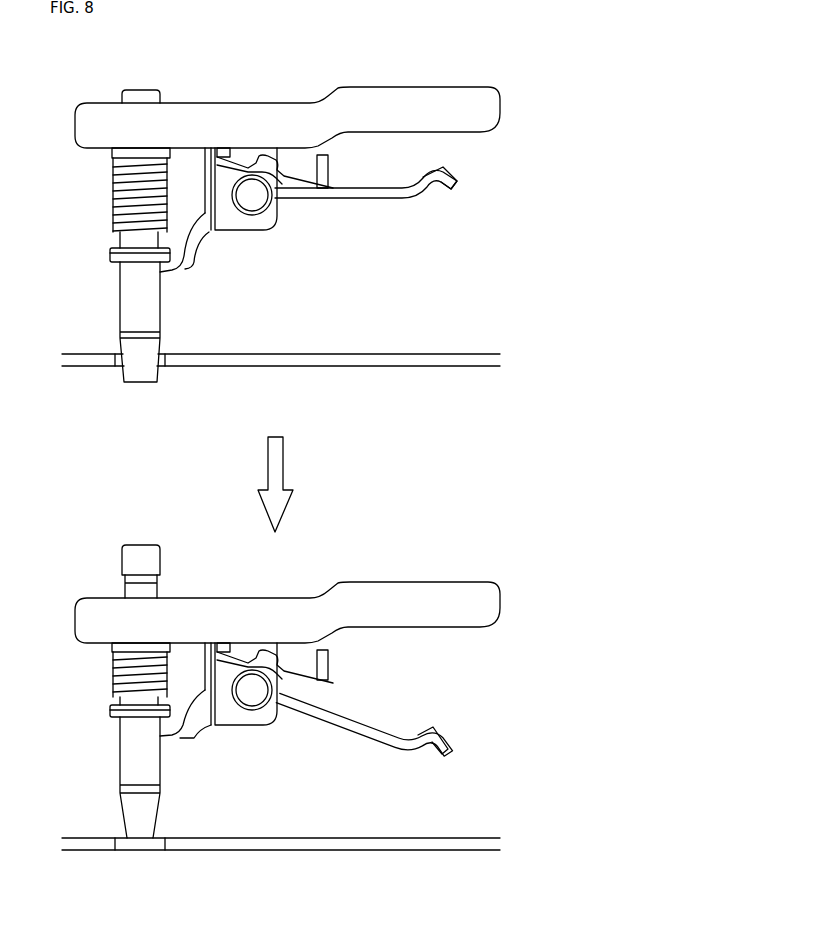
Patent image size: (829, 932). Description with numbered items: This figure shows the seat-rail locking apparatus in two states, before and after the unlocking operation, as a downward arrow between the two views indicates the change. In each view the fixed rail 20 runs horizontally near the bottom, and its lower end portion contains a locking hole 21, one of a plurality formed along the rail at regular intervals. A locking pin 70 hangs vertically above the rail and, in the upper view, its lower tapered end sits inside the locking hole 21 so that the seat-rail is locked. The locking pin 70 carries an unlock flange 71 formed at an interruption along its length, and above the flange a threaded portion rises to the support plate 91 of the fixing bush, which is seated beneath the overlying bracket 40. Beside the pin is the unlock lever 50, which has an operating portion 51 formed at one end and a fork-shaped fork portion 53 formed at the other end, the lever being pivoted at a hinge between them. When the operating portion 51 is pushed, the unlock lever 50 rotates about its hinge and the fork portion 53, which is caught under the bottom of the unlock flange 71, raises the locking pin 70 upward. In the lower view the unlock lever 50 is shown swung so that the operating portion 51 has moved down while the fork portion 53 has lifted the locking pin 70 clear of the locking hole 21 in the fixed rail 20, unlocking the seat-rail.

The bracket 40 is at (242, 110).
The support plate 91 is at (112, 152).
The unlock flange 71 is at (110, 252).
The locking pin 70 is at (128, 300).
The fixed rail 20 is at (345, 354).
The locking hole 21 is at (160, 370).
The fork portion 53 is at (201, 260).
The unlock lever 50 is at (372, 198).
The operating portion 51 is at (425, 196).